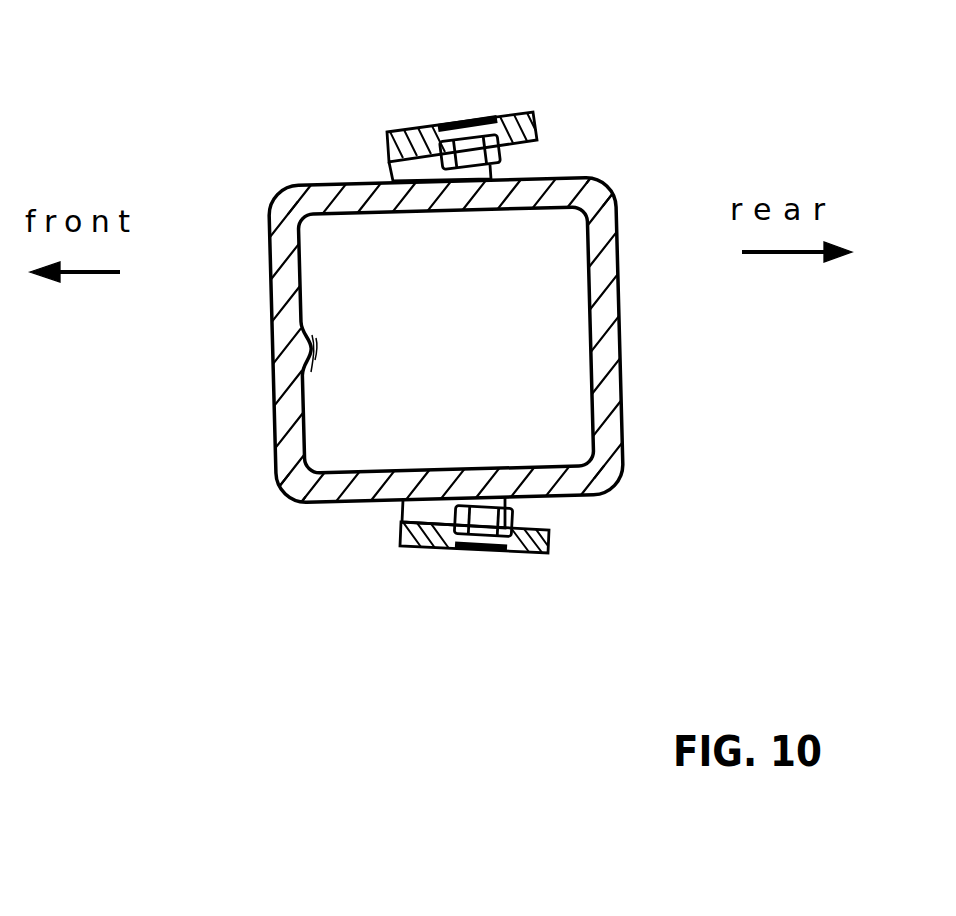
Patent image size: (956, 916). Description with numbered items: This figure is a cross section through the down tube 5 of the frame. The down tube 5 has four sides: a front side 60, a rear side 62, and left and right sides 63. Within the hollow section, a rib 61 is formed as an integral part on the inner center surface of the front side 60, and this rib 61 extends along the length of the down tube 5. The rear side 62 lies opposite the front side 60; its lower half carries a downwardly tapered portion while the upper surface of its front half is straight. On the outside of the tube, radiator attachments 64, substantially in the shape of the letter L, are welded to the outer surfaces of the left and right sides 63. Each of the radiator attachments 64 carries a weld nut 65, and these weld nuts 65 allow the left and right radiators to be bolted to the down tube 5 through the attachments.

The down tube 5 is at (263, 183).
The front side 60 is at (271, 327).
The rib 61 is at (309, 338).
The rear side 62 is at (621, 331).
The left and right sides 63 is at (446, 212).
The radiator attachments 64 is at (410, 131).
The weld nuts 65 is at (470, 145).